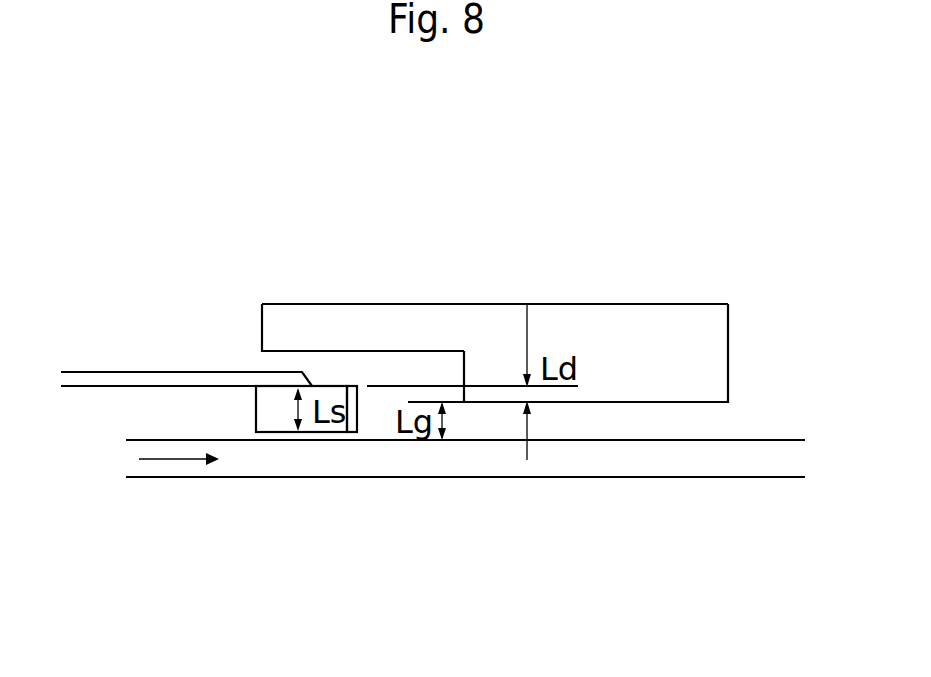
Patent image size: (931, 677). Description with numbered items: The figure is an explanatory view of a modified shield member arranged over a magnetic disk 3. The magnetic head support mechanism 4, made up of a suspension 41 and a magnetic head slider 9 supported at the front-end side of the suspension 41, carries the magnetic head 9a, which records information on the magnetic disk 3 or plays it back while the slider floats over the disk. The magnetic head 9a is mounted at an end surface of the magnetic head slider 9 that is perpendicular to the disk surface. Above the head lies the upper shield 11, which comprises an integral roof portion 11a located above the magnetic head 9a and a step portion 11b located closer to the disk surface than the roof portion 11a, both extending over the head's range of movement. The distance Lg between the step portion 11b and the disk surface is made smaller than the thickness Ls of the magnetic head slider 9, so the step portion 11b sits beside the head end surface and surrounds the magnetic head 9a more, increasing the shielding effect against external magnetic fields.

The magnetic disk 3 is at (700, 460).
The magnetic head support mechanism 4 is at (107, 350).
The suspension 41 is at (182, 387).
The magnetic head slider 9 is at (273, 428).
The magnetic head 9a is at (355, 433).
The upper shield 11 is at (362, 303).
The roof portion 11a is at (292, 322).
The step portion 11b is at (718, 353).